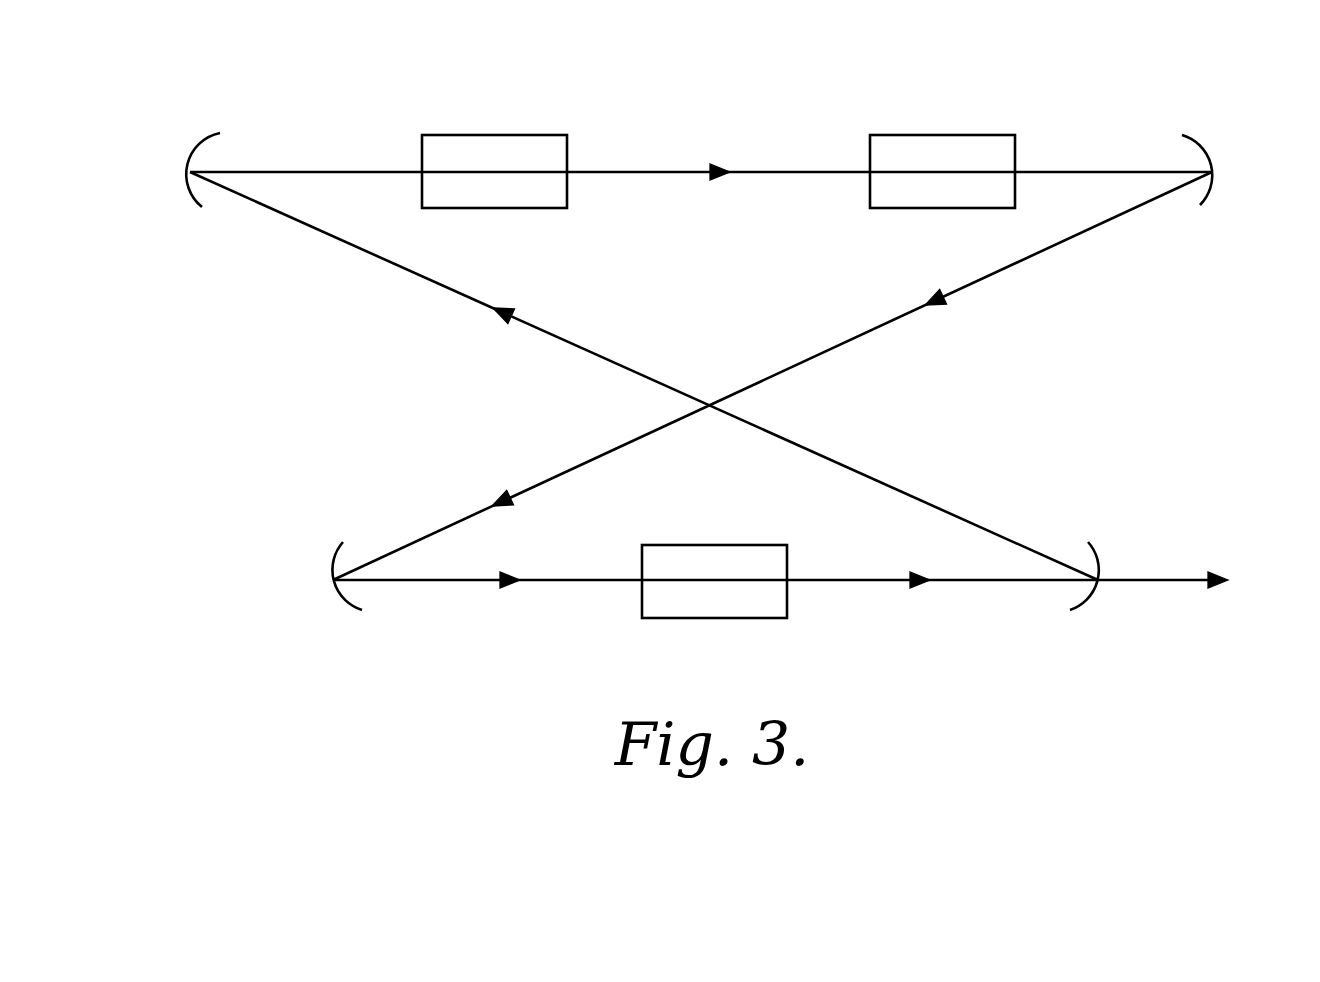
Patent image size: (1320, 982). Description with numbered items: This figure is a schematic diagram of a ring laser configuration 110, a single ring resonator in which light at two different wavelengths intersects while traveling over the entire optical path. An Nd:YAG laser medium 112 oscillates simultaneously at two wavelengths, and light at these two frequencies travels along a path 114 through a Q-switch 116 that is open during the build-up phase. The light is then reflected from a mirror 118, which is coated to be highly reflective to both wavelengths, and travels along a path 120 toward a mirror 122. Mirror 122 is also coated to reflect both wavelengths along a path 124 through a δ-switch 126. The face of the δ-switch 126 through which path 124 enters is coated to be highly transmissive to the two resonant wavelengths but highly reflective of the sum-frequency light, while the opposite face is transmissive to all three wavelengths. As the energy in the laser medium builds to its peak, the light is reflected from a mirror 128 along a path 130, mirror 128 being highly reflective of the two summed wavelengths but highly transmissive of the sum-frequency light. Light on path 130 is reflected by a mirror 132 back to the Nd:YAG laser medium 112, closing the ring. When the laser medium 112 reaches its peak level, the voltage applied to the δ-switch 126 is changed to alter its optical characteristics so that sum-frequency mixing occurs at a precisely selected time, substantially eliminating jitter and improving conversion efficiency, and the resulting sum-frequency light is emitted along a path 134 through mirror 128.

The configuration 110 is at (140, 580).
The Nd:YAG laser medium 112 is at (503, 210).
The path 114 is at (751, 170).
The Q-switch 116 is at (1015, 150).
The mirror 118 is at (1213, 190).
The path 120 is at (1000, 272).
The mirror 122 is at (328, 568).
The path 124 is at (560, 585).
The δ-switch 126 is at (714, 545).
The mirror 128 is at (1097, 548).
The path 130 is at (900, 489).
The mirror 132 is at (203, 150).
The path 134 is at (1165, 585).